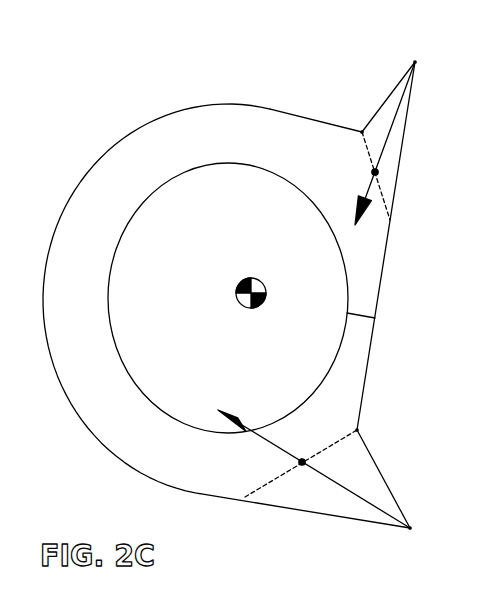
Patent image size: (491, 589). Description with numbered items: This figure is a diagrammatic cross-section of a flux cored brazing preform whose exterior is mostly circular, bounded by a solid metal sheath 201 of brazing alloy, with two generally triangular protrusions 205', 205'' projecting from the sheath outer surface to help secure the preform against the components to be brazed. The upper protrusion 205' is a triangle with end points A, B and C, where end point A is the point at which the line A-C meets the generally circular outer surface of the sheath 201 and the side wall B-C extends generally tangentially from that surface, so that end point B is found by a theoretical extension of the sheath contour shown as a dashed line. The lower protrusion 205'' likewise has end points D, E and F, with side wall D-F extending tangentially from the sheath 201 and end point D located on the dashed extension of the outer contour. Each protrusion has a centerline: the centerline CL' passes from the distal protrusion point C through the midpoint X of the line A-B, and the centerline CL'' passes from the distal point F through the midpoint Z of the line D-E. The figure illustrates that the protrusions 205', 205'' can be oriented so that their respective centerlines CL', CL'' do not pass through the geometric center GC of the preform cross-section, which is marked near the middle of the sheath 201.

The sheath 201 is at (83, 180).
The protrusion 205' is at (342, 227).
The protrusion 205'' is at (333, 479).
The end point A is at (362, 131).
The end point B is at (392, 220).
The distal protrusion point C is at (416, 60).
The end point D is at (245, 497).
The end point E is at (360, 428).
The distal point F is at (411, 528).
The midpoint X is at (372, 171).
The midpoint Z is at (305, 462).
The geometric center GC is at (239, 265).
The centerline CL' is at (394, 171).
The centerline CL'' is at (314, 486).